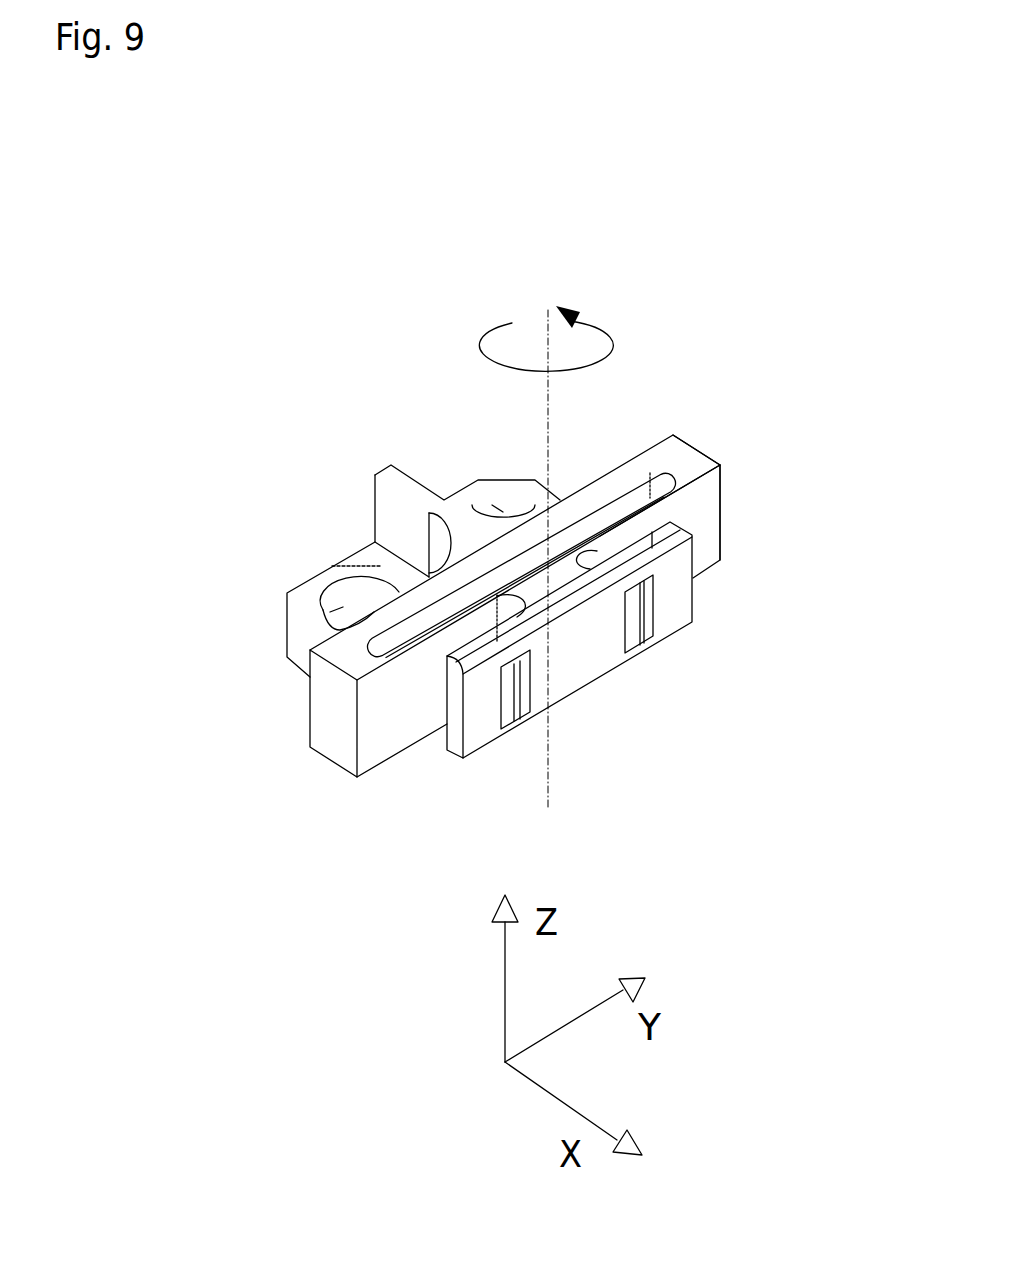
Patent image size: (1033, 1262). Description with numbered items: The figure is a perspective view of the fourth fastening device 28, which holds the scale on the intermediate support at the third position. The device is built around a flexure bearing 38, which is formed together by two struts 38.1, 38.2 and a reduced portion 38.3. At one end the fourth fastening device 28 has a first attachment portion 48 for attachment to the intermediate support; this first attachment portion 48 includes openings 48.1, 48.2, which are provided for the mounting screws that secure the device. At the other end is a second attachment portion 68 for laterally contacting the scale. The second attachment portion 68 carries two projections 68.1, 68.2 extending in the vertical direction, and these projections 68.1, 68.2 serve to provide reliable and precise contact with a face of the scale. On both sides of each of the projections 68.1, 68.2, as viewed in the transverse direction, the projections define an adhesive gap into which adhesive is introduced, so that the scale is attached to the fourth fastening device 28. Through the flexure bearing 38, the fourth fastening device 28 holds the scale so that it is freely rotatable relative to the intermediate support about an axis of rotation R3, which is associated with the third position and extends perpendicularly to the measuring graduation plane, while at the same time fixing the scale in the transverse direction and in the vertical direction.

The fourth fastening device 28 is at (331, 288).
The flexure bearing 38 is at (418, 657).
The strut 38.1 is at (412, 660).
The strut 38.2 is at (663, 511).
The reduced portion 38.3 is at (565, 577).
The first attachment portion 48 is at (330, 565).
The opening 48.1 is at (325, 613).
The opening 48.2 is at (490, 505).
The second attachment portion 68 is at (678, 597).
The projection 68.1 is at (522, 685).
The projection 68.2 is at (650, 640).
The axis of rotation R3 is at (548, 763).